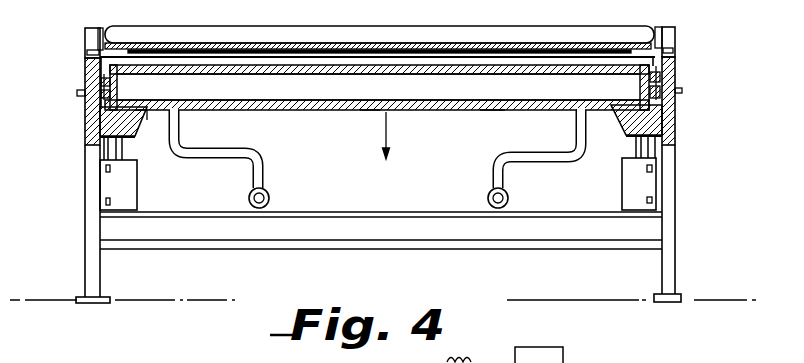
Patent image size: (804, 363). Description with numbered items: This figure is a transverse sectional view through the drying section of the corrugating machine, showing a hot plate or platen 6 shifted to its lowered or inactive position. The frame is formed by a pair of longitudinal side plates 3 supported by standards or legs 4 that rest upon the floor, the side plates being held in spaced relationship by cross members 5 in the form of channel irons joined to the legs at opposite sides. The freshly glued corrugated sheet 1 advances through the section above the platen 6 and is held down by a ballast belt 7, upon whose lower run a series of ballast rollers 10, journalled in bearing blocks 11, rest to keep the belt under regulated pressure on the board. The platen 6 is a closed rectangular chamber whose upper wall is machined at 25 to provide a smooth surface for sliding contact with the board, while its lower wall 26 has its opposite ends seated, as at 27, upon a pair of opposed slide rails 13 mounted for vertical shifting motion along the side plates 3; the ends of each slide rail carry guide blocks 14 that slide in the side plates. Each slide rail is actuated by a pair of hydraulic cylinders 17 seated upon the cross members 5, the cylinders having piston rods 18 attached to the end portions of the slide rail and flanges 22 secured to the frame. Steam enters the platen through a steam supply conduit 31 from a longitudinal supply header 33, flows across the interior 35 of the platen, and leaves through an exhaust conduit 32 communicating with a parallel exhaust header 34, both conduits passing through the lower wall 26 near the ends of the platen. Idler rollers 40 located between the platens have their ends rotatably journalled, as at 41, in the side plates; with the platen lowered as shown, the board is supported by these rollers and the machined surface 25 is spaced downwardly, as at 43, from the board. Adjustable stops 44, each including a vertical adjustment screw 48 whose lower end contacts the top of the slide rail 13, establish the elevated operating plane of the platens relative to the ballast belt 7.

The corrugated sheet 1 is at (476, 39).
The side plate 3 is at (100, 138).
The leg 4 is at (93, 271).
The cross member 5 is at (332, 228).
The platen 6 is at (370, 115).
The ballast belt 7 is at (253, 43).
The ballast roller 10 is at (180, 33).
The bearing block 11 is at (90, 37).
The slide rail 13 is at (97, 121).
The guide block 14 is at (122, 151).
The hydraulic cylinder 17 is at (128, 196).
The piston rod 18 is at (636, 151).
The flange 22 is at (113, 187).
The machined upper wall surface 25 is at (422, 63).
The lower wall 26 is at (412, 110).
The seat 27 is at (145, 115).
The steam supply conduit 31 is at (228, 135).
The exhaust conduit 32 is at (519, 151).
The supply header 33 is at (271, 196).
The exhaust header 34 is at (508, 196).
The platen interior 35 is at (488, 85).
The idler roller 40 is at (233, 63).
The journal 41 is at (676, 73).
The spacing 43 is at (300, 62).
The adjustable stop 44 is at (110, 92).
The vertical adjustment screw 48 is at (505, 354).